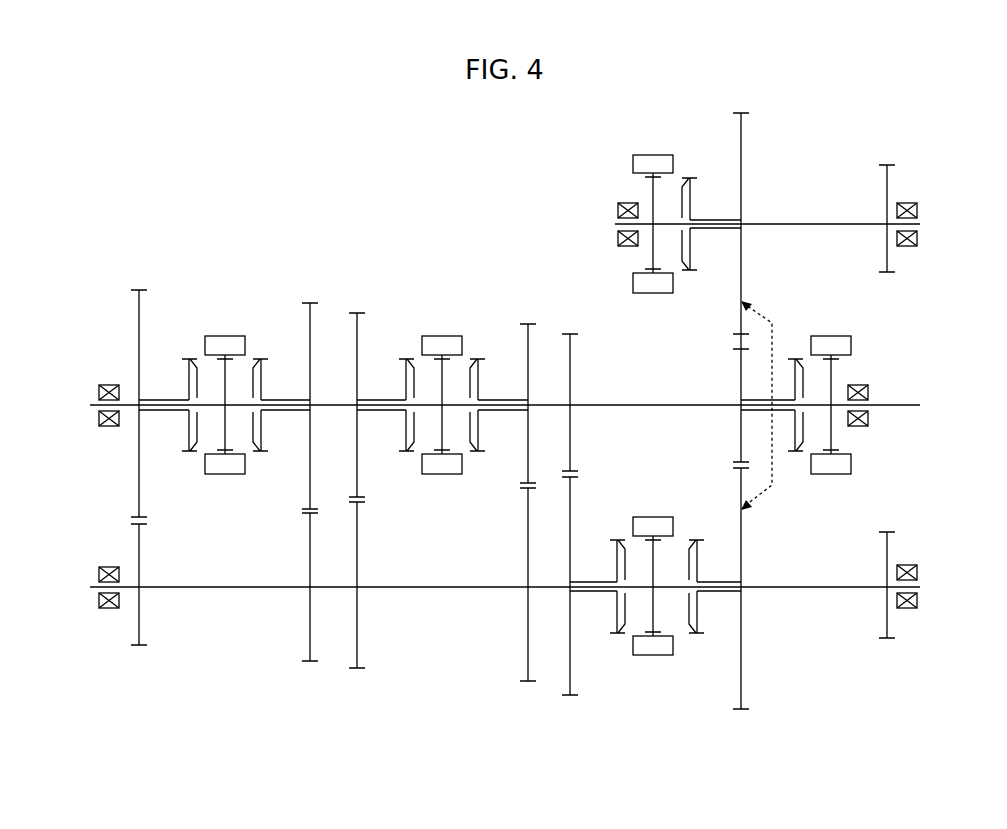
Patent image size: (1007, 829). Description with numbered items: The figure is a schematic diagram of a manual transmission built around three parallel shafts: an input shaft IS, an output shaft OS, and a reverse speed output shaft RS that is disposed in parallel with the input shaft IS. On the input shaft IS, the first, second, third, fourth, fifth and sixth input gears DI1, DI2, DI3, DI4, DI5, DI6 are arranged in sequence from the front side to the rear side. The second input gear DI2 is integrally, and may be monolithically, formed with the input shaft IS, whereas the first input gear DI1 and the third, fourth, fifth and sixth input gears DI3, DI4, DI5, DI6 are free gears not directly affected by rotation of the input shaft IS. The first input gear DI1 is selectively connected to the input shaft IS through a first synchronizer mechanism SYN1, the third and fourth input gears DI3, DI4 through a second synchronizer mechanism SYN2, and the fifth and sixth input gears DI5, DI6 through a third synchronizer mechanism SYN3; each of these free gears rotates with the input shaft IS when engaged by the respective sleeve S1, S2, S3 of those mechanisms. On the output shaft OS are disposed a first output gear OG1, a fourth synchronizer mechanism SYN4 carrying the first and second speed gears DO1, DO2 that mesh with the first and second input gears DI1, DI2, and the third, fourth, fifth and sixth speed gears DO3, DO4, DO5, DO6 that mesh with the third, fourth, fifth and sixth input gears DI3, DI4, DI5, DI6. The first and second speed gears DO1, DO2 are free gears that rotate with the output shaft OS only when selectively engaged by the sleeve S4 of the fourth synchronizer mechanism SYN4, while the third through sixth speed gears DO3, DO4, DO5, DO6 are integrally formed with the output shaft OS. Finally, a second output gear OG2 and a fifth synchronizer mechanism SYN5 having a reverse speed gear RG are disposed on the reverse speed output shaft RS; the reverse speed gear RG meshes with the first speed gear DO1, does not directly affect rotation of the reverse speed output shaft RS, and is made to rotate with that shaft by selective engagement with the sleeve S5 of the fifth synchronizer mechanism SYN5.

The input shaft IS is at (642, 403).
The output shaft OS is at (445, 587).
The reverse speed output shaft RS is at (772, 222).
The reverse speed gear RG is at (742, 127).
The first input gear DI1 is at (739, 363).
The second input gear DI2 is at (570, 334).
The third input gear DI3 is at (528, 324).
The fourth input gear DI4 is at (357, 313).
The fifth input gear DI5 is at (310, 303).
The sixth input gear DI6 is at (141, 306).
The first speed gear DO1 is at (743, 663).
The second speed gear DO2 is at (572, 678).
The third speed gear DO3 is at (530, 673).
The fourth speed gear DO4 is at (358, 648).
The fifth speed gear DO5 is at (312, 642).
The sixth speed gear DO6 is at (142, 625).
The first output gear OG1 is at (889, 548).
The second output gear OG2 is at (889, 177).
The sleeve S1 is at (830, 336).
The sleeve S2 is at (442, 337).
The sleeve S3 is at (225, 336).
The sleeve S4 is at (653, 658).
The sleeve S5 is at (653, 155).
The first synchronizer mechanism SYN1 is at (858, 377).
The second synchronizer mechanism SYN2 is at (458, 338).
The third synchronizer mechanism SYN3 is at (245, 338).
The fourth synchronizer mechanism SYN4 is at (669, 644).
The fifth synchronizer mechanism SYN5 is at (692, 172).